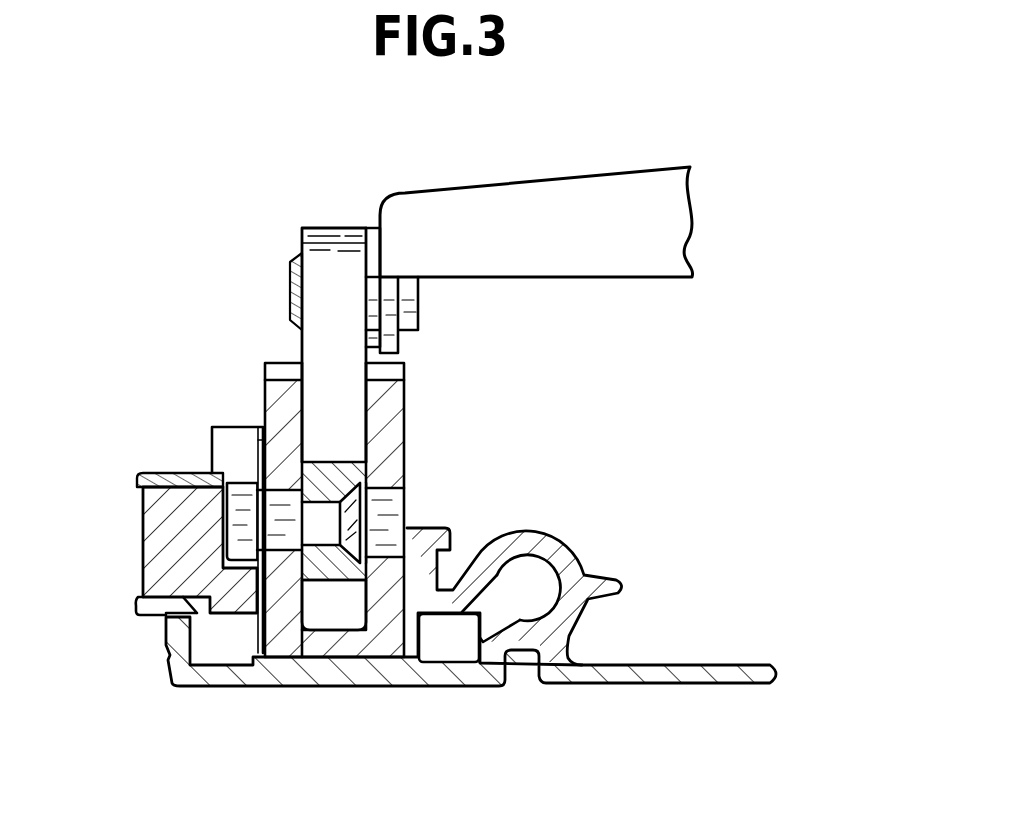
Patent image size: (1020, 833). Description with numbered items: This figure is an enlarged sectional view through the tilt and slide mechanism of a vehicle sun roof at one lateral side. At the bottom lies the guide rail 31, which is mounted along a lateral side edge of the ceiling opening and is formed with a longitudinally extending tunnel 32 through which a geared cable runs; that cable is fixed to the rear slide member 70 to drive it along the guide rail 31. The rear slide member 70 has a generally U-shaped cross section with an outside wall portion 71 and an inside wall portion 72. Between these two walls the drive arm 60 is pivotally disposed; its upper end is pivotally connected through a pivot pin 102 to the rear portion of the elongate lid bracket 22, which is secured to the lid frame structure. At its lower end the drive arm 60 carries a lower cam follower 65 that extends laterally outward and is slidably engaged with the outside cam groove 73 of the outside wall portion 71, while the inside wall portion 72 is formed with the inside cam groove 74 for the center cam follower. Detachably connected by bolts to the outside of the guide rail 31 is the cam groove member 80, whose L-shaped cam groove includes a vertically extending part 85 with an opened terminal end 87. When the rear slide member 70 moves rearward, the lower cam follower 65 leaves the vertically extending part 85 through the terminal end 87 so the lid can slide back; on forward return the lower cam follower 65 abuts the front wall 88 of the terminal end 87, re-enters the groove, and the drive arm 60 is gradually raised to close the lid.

The lid bracket 22 is at (525, 183).
The drive arm 60 is at (338, 240).
The pivot pin 102 is at (292, 280).
The rear slide member 70 is at (275, 362).
The outside wall portion 71 is at (272, 392).
The inside wall portion 72 is at (392, 416).
The outside cam groove 73 is at (279, 552).
The inside cam groove 74 is at (407, 500).
The cam groove member 80 is at (145, 500).
The vertically extending part 85 is at (222, 458).
The terminal end 87 is at (240, 443).
The front wall 88 is at (240, 443).
The lower cam follower 65 is at (240, 528).
The guide rail 31 is at (445, 693).
The tunnel 32 is at (545, 568).